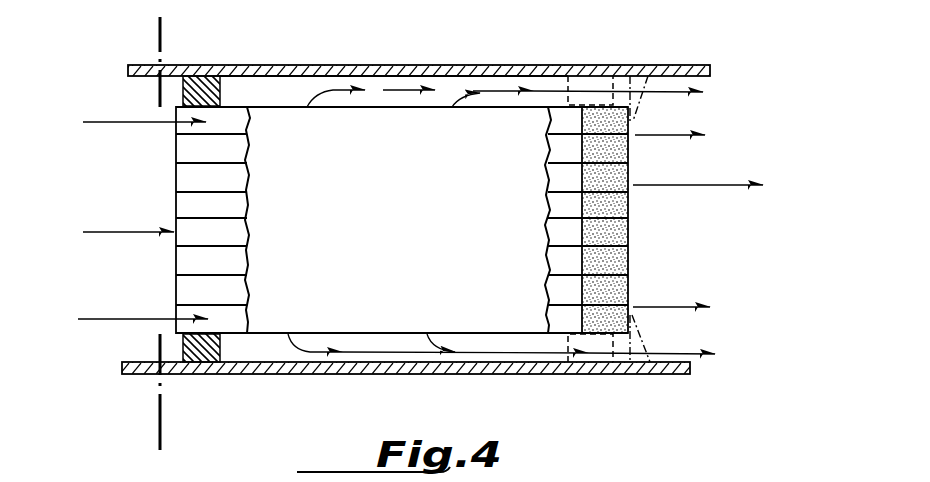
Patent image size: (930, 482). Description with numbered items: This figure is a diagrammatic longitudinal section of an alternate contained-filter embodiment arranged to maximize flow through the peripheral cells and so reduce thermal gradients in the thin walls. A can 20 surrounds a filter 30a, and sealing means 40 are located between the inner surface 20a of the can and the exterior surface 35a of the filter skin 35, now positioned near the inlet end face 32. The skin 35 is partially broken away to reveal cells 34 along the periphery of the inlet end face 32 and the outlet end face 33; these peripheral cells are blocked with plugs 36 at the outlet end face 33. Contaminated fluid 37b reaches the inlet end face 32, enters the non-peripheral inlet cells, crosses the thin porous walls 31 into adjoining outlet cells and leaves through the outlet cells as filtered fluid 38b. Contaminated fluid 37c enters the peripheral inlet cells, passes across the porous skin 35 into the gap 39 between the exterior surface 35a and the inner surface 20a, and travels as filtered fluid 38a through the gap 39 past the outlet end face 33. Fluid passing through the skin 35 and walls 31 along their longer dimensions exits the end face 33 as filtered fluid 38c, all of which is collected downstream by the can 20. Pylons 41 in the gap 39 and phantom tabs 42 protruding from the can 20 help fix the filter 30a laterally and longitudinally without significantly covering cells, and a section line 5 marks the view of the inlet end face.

The section line 5- 5 is at (157, 37).
The can 20 is at (336, 62).
The inner surface of the can 20a is at (240, 82).
The filter 30a is at (394, 329).
The thin porous walls 31 is at (232, 218).
The inlet end face 32 is at (176, 176).
The outlet end face 33 is at (630, 258).
The cells 34 is at (245, 290).
The skin 35 is at (410, 252).
The exterior surface of the skin 35a is at (245, 106).
The plugs 36 is at (600, 210).
The contaminated fluid 37b is at (125, 232).
The contaminated fluid 37c is at (108, 121).
The filtered fluid 38a is at (694, 93).
The filtered fluid 38b is at (720, 188).
The filtered fluid 38c is at (692, 136).
The gap 39 is at (446, 82).
The sealing means 40 is at (203, 353).
The pylons 41 is at (583, 87).
The tabs 42 is at (649, 77).